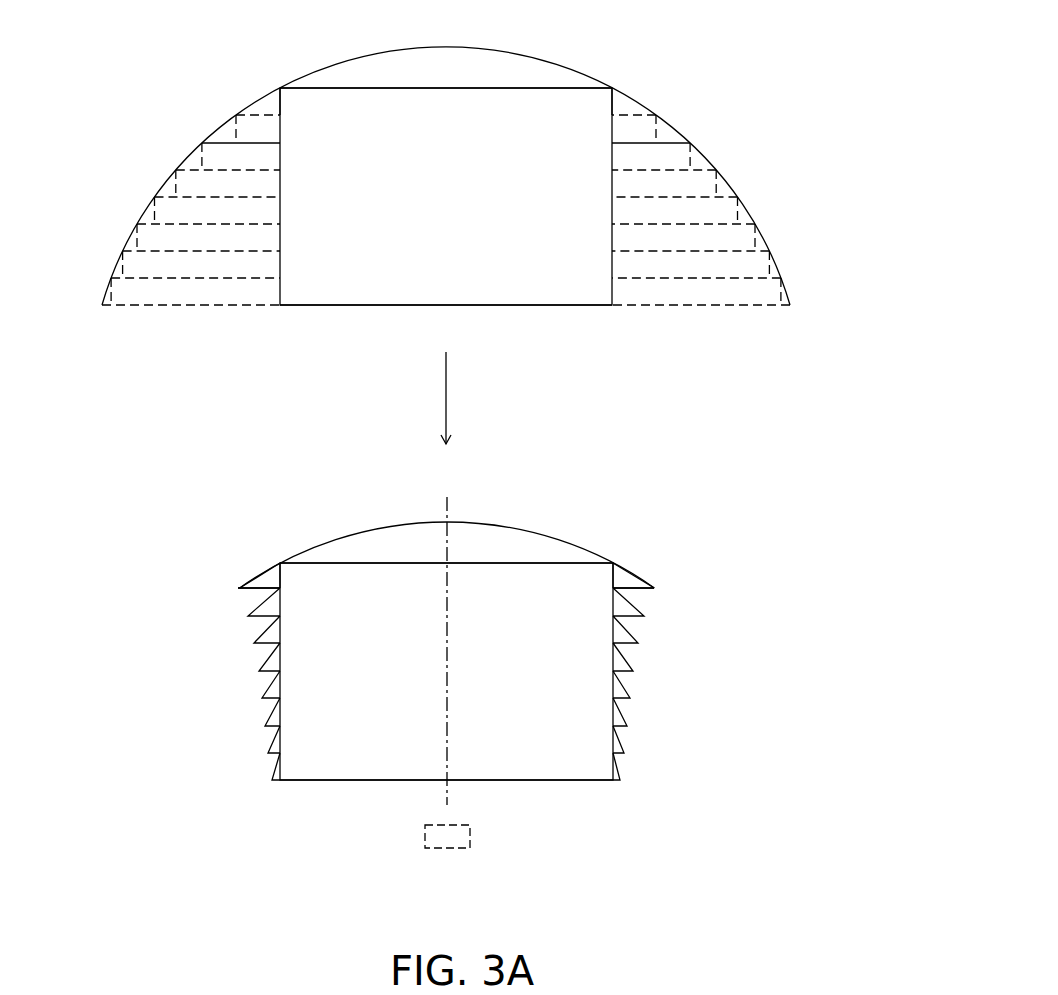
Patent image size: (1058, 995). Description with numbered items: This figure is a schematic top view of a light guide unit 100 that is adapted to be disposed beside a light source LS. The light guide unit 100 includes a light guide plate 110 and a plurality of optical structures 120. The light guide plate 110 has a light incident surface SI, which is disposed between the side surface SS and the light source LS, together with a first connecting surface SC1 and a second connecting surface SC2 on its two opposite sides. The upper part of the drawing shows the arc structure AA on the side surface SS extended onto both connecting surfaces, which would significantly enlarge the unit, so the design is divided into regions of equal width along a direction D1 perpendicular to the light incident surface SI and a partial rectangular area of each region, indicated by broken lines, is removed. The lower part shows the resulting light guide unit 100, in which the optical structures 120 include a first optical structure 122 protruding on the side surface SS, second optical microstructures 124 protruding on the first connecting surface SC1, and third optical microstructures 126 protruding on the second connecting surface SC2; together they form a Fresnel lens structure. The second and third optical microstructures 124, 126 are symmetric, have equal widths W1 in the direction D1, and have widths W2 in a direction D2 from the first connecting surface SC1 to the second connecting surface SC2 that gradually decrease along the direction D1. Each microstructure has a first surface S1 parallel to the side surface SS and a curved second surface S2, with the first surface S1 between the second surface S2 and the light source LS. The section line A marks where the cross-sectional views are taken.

The light guide unit 100 is at (524, 696).
The light guide plate 110 is at (560, 785).
The optical structures 120 is at (524, 623).
The first optical structure 122 is at (538, 555).
The second optical microstructures 124 is at (272, 714).
The third optical microstructures 126 is at (622, 714).
The side surface SS is at (372, 84).
The light incident surface SI is at (375, 309).
The first connecting surface SC1 is at (273, 98).
The second connecting surface SC2 is at (619, 98).
The first surface S1 is at (244, 591).
The second surface S2 is at (247, 579).
The arc structure AA is at (478, 60).
The width W1 is at (295, 627).
The width W2 is at (308, 793).
The line A-A' A is at (450, 804).
The light source LS is at (438, 853).
The direction D1 is at (78, 33).
The direction D2 is at (78, 33).